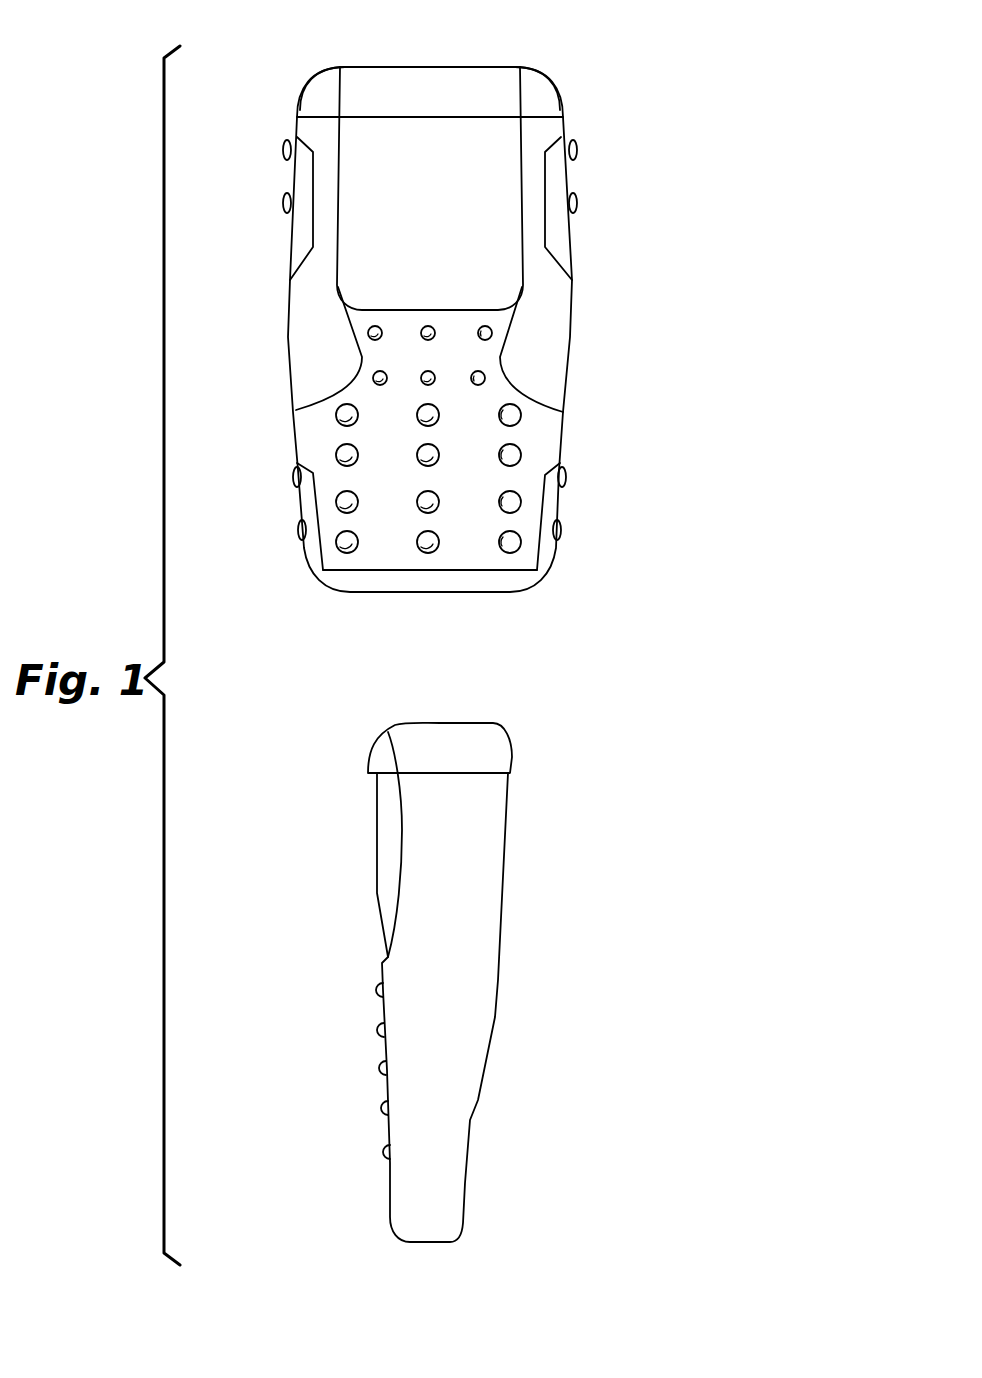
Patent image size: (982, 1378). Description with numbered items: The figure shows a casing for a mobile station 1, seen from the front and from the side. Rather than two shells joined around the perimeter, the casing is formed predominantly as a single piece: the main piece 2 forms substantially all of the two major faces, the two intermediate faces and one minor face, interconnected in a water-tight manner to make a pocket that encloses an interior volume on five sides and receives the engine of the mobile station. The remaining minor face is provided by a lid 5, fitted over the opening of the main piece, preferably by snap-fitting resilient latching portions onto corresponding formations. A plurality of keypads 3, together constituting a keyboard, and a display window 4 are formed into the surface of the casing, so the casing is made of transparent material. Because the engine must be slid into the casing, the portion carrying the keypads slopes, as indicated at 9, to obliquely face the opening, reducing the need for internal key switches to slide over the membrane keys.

The mobile station 1 is at (646, 111).
The main piece 2 is at (490, 560).
The keypads 3 is at (343, 455).
The display window 4 is at (440, 214).
The lid 5 is at (441, 98).
The sloping keypad portion 9 is at (467, 1167).